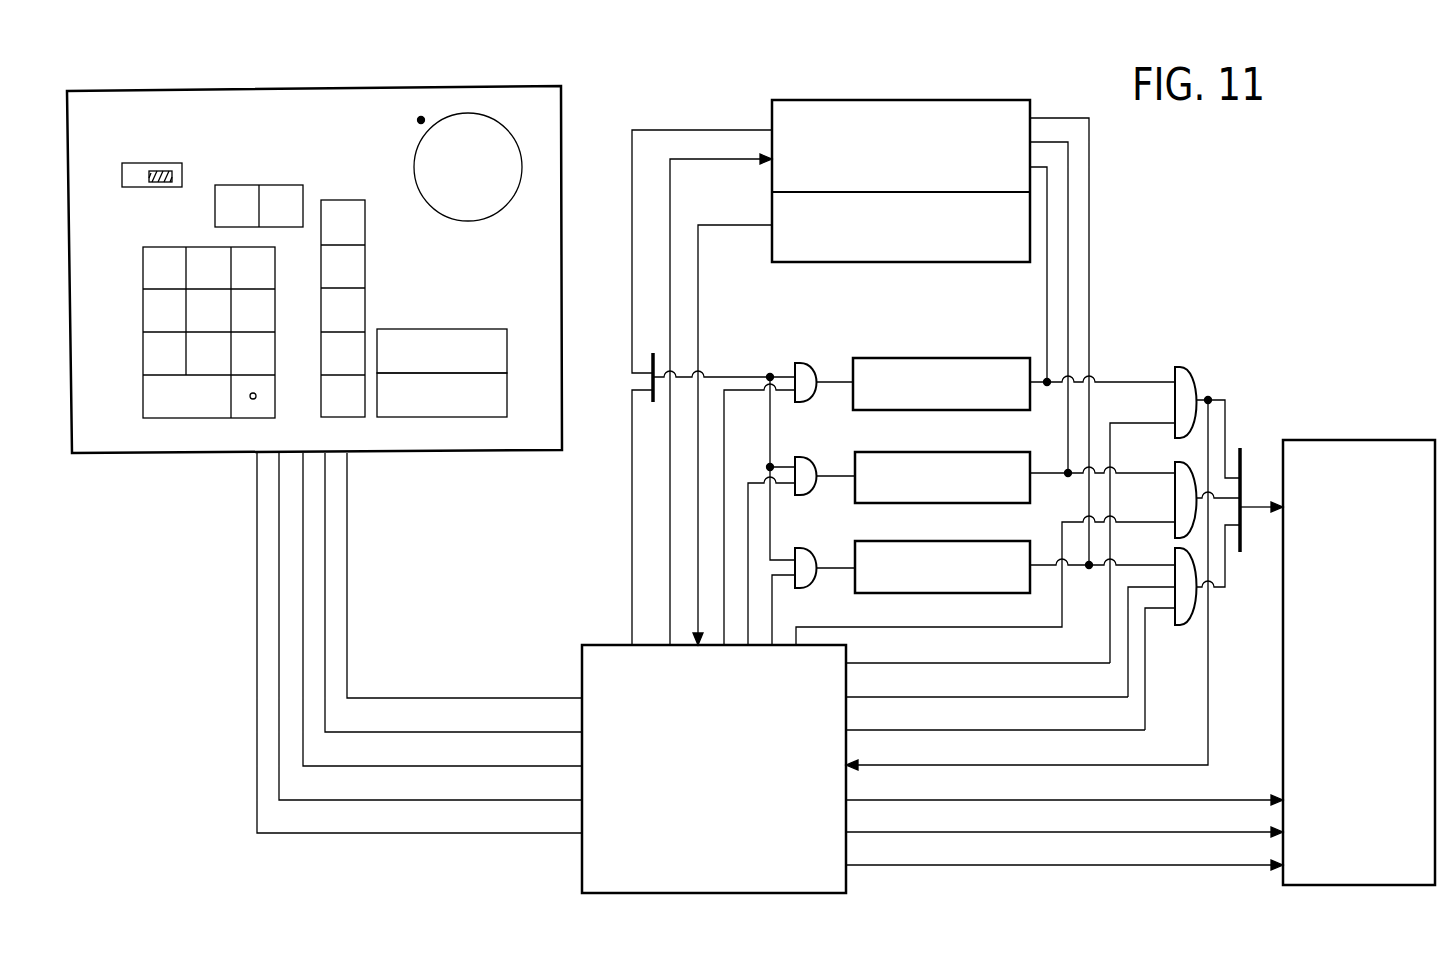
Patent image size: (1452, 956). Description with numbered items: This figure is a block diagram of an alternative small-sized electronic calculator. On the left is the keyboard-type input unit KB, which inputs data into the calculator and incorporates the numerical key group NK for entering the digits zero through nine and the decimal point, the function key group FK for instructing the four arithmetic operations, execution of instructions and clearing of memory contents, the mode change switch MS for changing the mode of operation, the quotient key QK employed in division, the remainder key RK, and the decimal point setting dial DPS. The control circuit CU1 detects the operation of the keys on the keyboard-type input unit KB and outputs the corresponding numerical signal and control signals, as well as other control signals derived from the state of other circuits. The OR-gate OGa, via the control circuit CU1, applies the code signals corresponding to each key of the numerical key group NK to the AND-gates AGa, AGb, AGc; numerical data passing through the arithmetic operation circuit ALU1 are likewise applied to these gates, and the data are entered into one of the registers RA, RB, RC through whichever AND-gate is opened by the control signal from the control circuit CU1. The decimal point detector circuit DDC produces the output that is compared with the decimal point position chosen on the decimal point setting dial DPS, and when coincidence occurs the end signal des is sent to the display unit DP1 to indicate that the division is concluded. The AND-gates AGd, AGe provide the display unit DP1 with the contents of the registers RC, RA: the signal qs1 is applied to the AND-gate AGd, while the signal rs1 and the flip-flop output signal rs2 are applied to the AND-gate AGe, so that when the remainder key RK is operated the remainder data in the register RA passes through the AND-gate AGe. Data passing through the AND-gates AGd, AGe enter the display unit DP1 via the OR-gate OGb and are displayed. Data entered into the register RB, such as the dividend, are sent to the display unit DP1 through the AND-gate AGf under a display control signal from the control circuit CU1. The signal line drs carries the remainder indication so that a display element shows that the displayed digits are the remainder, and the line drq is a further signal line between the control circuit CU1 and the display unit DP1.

The keyboard-type input unit KB is at (334, 90).
The mode change switch MS is at (157, 163).
The decimal point setting dial DPS is at (468, 221).
The numerical key group NK is at (192, 420).
The function key group FK is at (367, 294).
The quotient key QK is at (508, 346).
The remainder key RK is at (508, 390).
The arithmetic operation circuit ALU1 is at (907, 100).
The decimal point detector circuit DDC is at (878, 263).
The OR-gate OGa is at (650, 375).
The AND-gate AGa is at (810, 548).
The AND-gate AGb is at (810, 457).
The AND-gate AGc is at (810, 363).
The AND-gate AGd is at (1195, 376).
The AND-gate AGe is at (1178, 626).
The AND-gate AGf is at (1175, 499).
The register RA is at (1015, 567).
The register RB is at (1015, 477).
The register RC is at (1014, 384).
The OR-gate OGb is at (1241, 452).
The display unit DP1 is at (1350, 440).
The control circuit CU1 is at (582, 869).
The quotient display signal qs1 is at (846, 662).
The remainder display signal rs1 is at (846, 697).
The flip-flop output signal rs2 is at (846, 731).
The display request signal drq is at (846, 800).
The remainder indication signal line drs is at (846, 832).
The end signal des is at (846, 865).